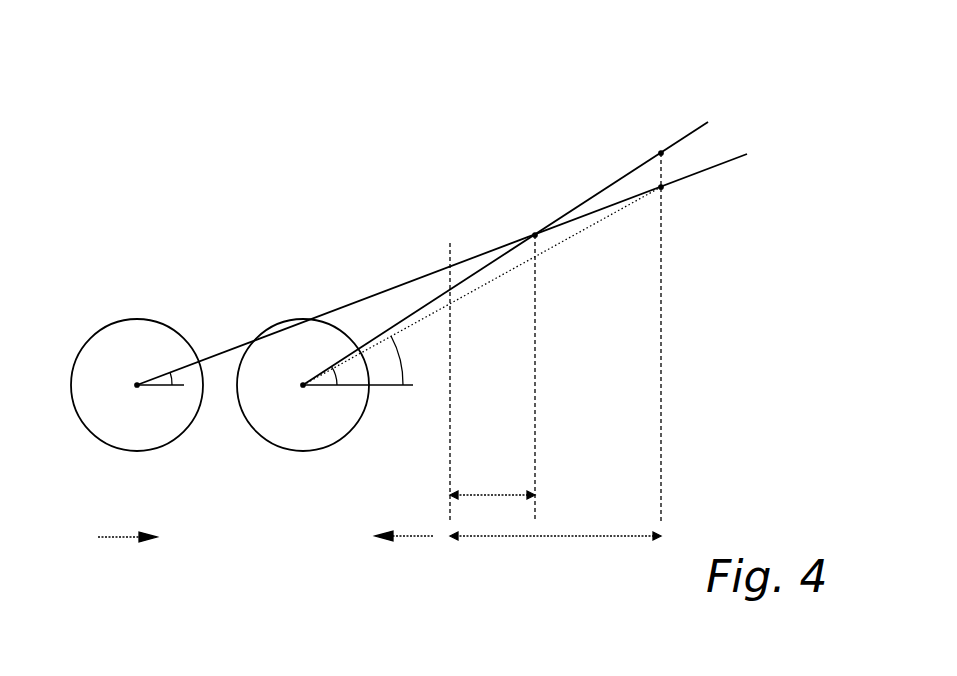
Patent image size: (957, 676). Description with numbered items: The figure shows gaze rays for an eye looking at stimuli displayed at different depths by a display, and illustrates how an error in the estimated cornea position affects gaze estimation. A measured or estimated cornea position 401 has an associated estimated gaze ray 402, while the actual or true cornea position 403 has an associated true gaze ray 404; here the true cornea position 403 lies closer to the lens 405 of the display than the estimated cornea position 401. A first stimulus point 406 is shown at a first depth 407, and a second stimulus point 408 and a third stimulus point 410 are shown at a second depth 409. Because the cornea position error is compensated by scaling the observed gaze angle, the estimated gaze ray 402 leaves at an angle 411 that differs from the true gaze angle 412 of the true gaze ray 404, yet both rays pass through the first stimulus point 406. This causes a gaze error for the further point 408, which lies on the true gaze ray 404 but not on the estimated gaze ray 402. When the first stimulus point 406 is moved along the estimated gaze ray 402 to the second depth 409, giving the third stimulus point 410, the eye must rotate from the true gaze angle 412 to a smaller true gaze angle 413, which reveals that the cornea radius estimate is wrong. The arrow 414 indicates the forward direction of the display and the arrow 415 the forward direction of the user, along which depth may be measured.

The estimated cornea position 401 is at (137, 385).
The estimated gaze ray 402 is at (728, 165).
The true cornea position 403 is at (303, 385).
The true gaze ray 404 is at (695, 120).
The lens 405 is at (448, 253).
The first stimulus point 406 is at (535, 235).
The first depth 407 is at (480, 492).
The second stimulus point 408 is at (661, 153).
The second depth 409 is at (555, 537).
The third stimulus point 410 is at (661, 187).
The angle of estimated gaze ray 411 is at (174, 377).
The true gaze angle 412 is at (340, 380).
The smaller true gaze angle 413 is at (402, 360).
The arrow indicating forward direction of the display 414 is at (404, 556).
The arrow indicating forward direction of the user 415 is at (127, 556).